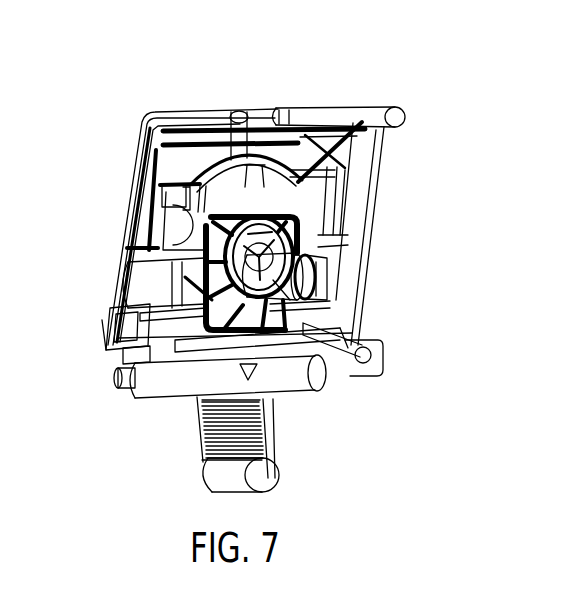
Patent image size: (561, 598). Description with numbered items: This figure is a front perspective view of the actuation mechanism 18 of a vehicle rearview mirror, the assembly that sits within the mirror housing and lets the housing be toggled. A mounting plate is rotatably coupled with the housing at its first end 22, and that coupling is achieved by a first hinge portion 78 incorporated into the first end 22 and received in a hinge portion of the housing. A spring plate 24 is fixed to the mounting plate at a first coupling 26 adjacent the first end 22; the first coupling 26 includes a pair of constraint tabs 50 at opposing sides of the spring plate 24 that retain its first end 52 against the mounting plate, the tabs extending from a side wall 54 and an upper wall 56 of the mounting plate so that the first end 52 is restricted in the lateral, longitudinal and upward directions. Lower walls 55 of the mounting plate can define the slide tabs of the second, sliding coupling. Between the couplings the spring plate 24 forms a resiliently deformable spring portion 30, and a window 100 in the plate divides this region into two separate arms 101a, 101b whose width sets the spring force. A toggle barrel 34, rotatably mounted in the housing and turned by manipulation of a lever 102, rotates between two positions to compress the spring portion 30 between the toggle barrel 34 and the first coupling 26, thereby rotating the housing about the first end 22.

The actuation mechanism 18 is at (281, 68).
The first end 22 is at (130, 113).
The spring plate 24 is at (322, 199).
The first coupling 26 is at (140, 233).
The spring portion 30 is at (108, 272).
The toggle barrel 34 is at (298, 384).
The constraint tabs 50 is at (172, 200).
The first end 52 is at (318, 140).
The side wall 54 is at (158, 224).
The lower walls 55 is at (120, 351).
The upper wall 56 is at (178, 182).
The first hinge portion 78 is at (183, 117).
The window 100 is at (230, 338).
The arm 101a is at (108, 318).
The arm 101b is at (370, 340).
The lever 102 is at (268, 486).